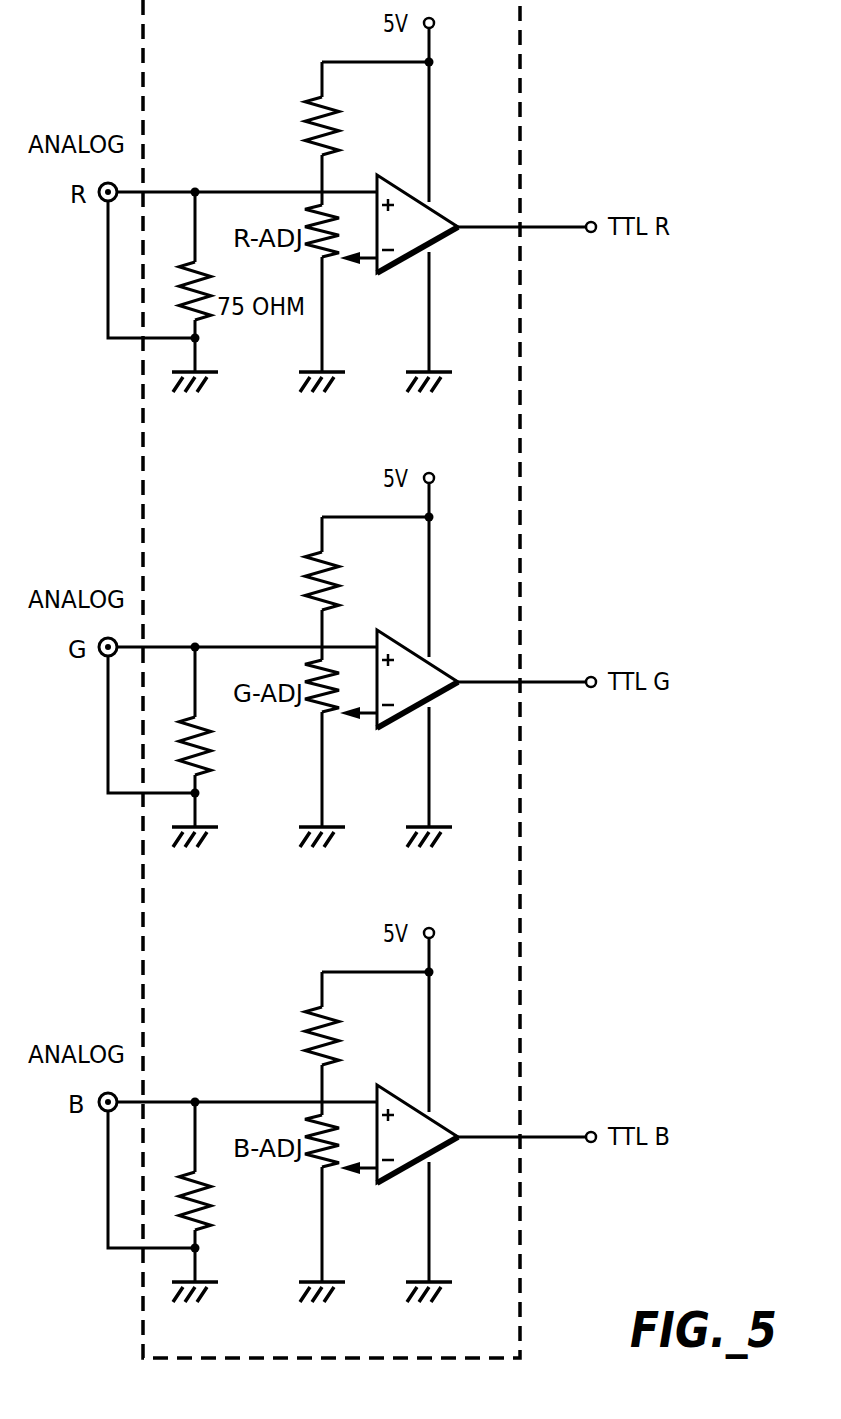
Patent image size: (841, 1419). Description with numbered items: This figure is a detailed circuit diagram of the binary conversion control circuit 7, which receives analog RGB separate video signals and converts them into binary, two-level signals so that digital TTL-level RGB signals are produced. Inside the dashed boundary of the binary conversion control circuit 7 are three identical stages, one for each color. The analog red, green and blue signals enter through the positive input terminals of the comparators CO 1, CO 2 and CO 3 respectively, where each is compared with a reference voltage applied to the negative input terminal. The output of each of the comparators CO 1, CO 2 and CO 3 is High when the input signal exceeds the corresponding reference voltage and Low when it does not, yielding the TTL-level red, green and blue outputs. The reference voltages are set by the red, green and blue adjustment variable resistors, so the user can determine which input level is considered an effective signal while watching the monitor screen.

The binary conversion control circuit 7 is at (520, 68).
The comparator CO1 1 is at (440, 224).
The comparator CO2 2 is at (440, 679).
The comparator CO3 3 is at (440, 1134).